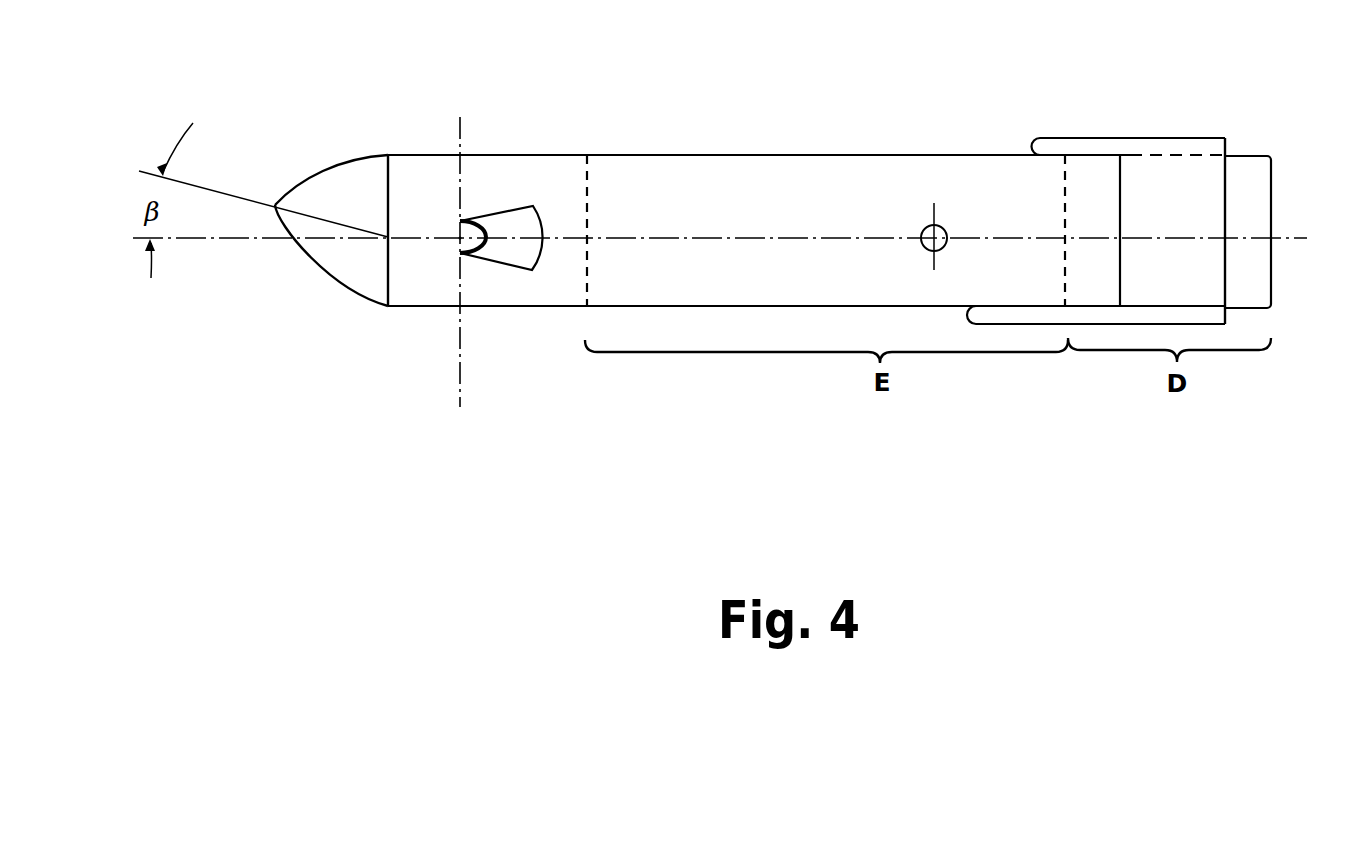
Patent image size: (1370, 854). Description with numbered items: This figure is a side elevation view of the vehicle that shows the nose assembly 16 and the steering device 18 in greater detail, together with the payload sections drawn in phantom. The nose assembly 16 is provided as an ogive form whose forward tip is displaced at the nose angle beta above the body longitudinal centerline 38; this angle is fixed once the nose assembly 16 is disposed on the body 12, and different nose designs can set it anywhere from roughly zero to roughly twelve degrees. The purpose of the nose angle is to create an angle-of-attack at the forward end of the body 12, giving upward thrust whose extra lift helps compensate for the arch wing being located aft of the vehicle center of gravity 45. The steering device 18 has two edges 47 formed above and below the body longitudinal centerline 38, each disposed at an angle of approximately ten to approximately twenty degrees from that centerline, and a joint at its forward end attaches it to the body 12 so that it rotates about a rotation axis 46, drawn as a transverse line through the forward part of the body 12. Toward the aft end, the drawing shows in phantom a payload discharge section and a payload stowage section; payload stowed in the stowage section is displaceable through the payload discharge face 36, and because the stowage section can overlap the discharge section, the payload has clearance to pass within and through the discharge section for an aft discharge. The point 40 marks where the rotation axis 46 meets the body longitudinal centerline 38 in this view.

The body 12 is at (823, 160).
The nose assembly 16 is at (359, 176).
The steering device 18 is at (532, 218).
The payload discharge face 36 is at (1273, 200).
The body longitudinal centerline 38 is at (223, 238).
The center point 40 is at (458, 238).
The center of gravity 45 is at (938, 235).
The rotation axis 46 is at (460, 130).
The edges 47 is at (480, 218).